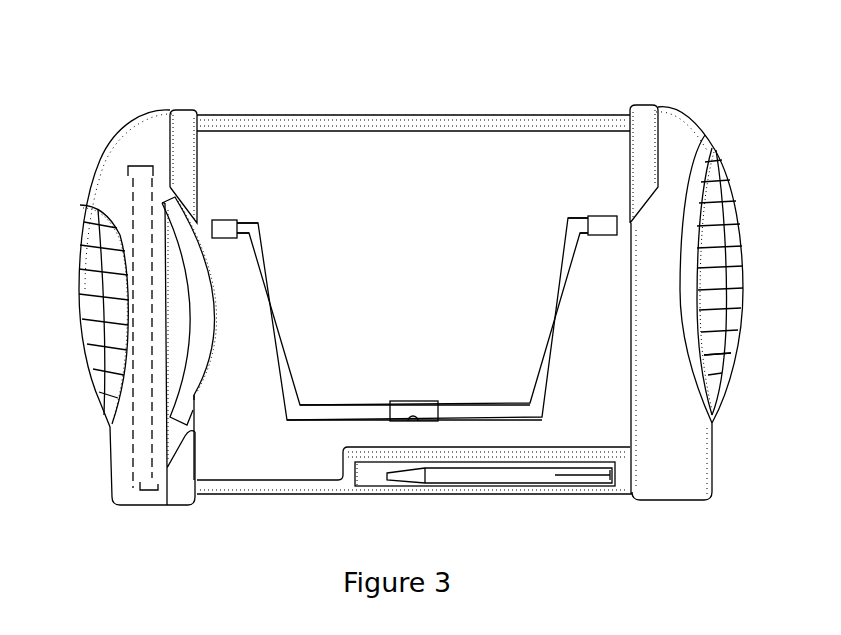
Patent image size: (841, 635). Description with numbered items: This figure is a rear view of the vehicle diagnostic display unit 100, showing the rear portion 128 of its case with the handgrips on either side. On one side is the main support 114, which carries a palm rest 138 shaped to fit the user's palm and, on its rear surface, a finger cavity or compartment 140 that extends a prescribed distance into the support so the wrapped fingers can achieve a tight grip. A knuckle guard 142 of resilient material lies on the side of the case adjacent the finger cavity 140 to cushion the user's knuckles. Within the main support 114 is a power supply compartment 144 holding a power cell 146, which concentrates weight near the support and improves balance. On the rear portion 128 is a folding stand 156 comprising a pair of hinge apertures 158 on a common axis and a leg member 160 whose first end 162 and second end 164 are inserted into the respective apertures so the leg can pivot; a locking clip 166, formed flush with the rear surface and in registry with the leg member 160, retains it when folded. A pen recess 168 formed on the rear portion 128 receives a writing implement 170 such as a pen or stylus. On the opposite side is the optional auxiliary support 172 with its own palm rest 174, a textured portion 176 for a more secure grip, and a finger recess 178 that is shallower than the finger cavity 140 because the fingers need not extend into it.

The vehicle diagnostic display unit 100 is at (577, 80).
The main support 114 is at (142, 114).
The rear portion 128 is at (389, 187).
The palm rest 138 is at (90, 314).
The finger cavity or compartment 140 is at (173, 377).
The knuckle guard 142 is at (198, 357).
The power supply compartment 144 is at (128, 170).
The power cell 146 is at (150, 481).
The folding stand 156 is at (457, 296).
The hinge apertures 158 is at (222, 220).
The leg member 160 is at (338, 404).
The first end 162 is at (249, 222).
The second end 164 is at (573, 217).
The locking clip 166 is at (415, 400).
The pen recess 168 is at (372, 484).
The writing implement 170 is at (493, 478).
The auxiliary support 172 is at (690, 123).
The palm rest 174 is at (727, 303).
The textured portion 176 is at (720, 218).
The finger recess 178 is at (697, 392).